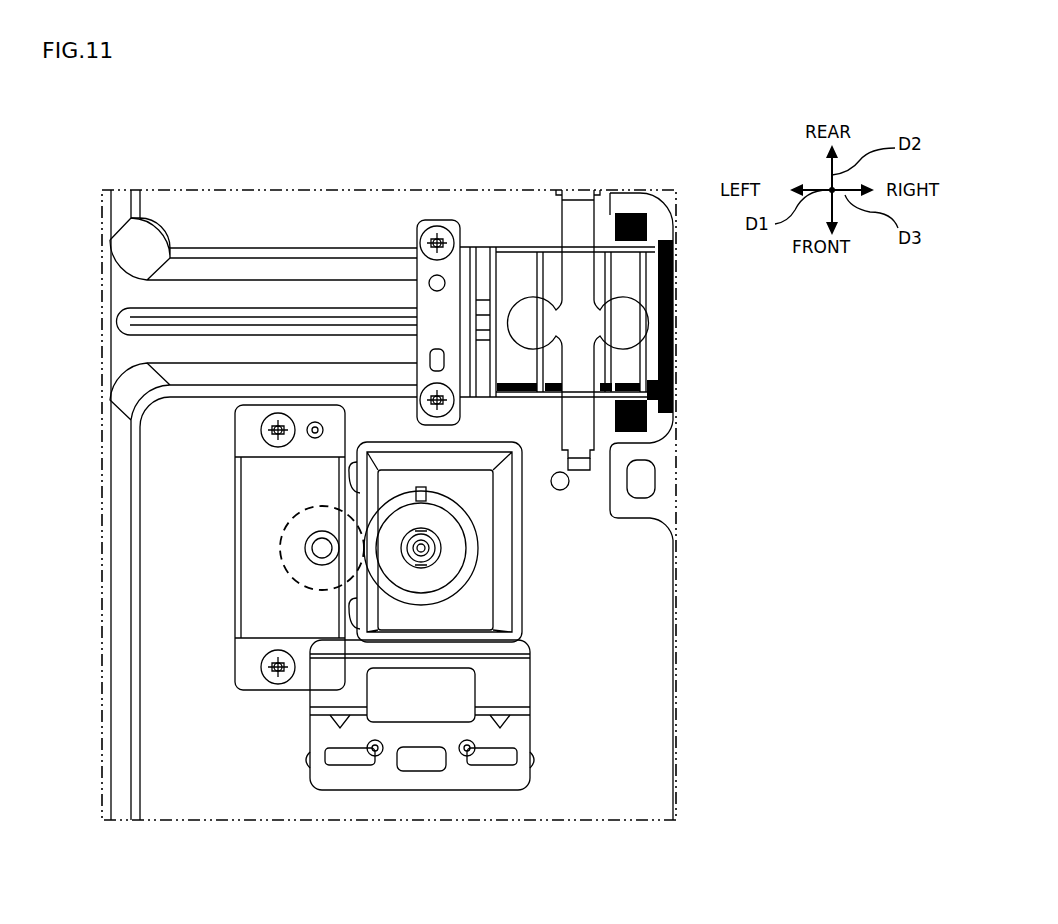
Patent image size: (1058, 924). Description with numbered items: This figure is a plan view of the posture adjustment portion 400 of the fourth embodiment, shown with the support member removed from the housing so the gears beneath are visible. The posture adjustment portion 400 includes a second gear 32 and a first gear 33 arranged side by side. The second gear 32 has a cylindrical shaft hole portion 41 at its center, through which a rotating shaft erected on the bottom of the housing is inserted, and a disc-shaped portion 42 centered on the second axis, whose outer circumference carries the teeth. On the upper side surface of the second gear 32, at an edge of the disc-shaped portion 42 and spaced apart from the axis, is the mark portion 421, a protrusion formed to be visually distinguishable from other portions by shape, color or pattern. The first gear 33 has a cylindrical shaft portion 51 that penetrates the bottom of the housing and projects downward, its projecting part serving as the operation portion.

The posture adjustment portion 400 is at (268, 710).
The first gear 33 is at (268, 547).
The shaft portion 51 is at (318, 538).
The second gear 32 is at (486, 569).
The disc-shaped portion 42 is at (452, 548).
The shaft hole portion 41 is at (428, 560).
The mark portion 421 is at (424, 487).